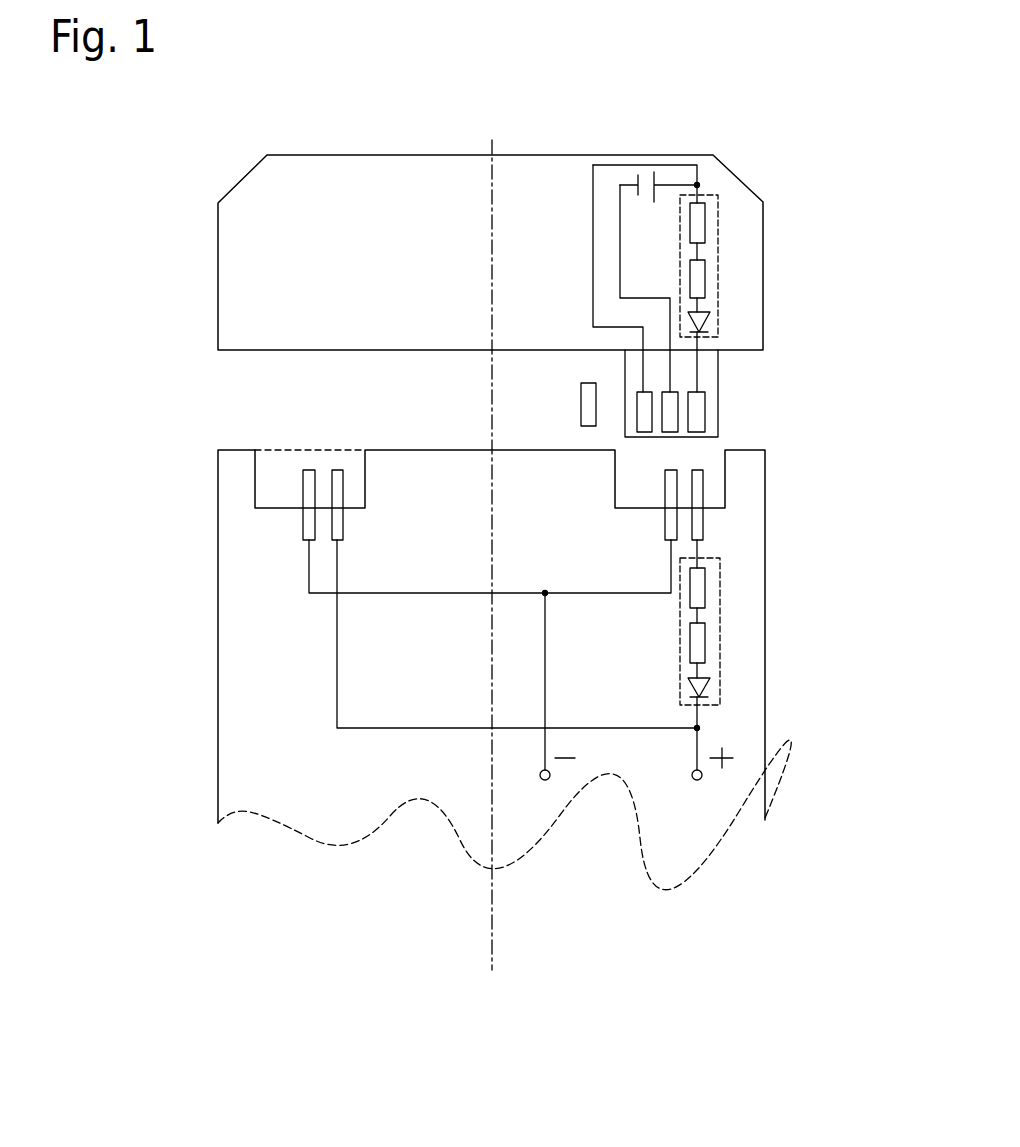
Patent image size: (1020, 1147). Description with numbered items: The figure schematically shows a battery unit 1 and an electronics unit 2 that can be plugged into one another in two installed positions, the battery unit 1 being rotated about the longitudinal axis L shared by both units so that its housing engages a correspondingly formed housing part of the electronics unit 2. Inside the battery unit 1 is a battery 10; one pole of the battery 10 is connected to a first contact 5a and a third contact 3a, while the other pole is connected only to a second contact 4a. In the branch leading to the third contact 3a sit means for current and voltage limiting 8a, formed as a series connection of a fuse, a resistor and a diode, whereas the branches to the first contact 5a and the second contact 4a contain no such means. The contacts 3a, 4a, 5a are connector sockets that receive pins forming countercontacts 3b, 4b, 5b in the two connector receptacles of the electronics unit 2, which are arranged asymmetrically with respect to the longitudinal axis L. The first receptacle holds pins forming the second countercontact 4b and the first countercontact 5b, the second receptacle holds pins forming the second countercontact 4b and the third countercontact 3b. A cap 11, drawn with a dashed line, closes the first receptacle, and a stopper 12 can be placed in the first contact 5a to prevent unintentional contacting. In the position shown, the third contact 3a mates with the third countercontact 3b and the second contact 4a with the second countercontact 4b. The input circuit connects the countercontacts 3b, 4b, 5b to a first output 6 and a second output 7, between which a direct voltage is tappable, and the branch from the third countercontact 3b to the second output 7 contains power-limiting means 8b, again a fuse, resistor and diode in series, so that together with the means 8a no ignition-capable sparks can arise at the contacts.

The battery unit 1 is at (212, 180).
The electronics unit 2 is at (240, 622).
The third contact 3a is at (700, 412).
The third countercontact 3b is at (697, 490).
The second contact 4a is at (670, 407).
The second countercontact 4b is at (308, 525).
The first contact 5a is at (642, 412).
The first countercontact 5b is at (335, 492).
The first output 6 is at (548, 780).
The second output 7 is at (700, 780).
The means for electrical current- and/or voltage limiting 8a is at (720, 273).
The means for power limiting 8b is at (725, 618).
The battery 10 is at (650, 221).
The cap 11 is at (275, 453).
The stopper 12 is at (580, 403).
The longitudinal axis L is at (492, 930).